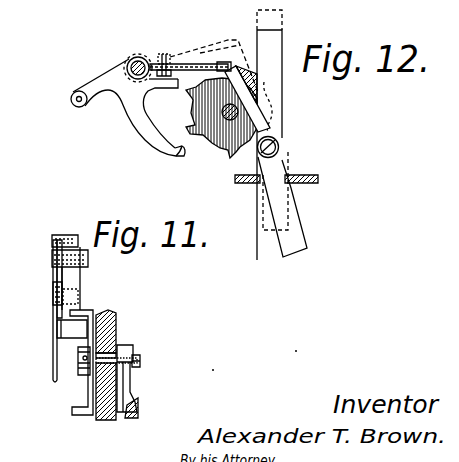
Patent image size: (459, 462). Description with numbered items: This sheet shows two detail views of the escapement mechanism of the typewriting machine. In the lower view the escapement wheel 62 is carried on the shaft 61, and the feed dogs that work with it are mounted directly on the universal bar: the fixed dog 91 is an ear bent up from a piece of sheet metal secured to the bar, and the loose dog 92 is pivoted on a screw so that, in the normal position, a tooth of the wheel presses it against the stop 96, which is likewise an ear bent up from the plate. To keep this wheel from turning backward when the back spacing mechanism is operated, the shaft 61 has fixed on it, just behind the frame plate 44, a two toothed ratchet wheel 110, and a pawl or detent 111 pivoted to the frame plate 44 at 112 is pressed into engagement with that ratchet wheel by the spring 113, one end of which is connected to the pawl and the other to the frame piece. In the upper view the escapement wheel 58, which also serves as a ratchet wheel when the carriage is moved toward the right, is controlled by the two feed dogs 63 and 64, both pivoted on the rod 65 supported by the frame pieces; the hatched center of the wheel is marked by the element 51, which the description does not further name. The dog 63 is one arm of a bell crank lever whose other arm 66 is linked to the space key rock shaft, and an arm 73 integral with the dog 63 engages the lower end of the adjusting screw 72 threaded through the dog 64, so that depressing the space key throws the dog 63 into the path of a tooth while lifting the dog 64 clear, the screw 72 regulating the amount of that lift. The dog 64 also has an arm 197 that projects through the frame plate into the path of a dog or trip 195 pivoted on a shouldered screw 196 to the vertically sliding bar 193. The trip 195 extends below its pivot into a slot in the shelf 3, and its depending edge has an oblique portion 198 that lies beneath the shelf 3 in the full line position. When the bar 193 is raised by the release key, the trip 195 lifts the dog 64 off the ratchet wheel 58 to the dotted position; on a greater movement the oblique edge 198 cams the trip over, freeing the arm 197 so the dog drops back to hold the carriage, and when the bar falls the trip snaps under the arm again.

In FIG. 12, the shelf 3 is at (300, 176).
In FIG. 11, the frame plate 44 is at (115, 313).
In FIG. 12, the pivot pin 51 is at (228, 112).
In FIG. 12, the escapement wheel 58 is at (209, 140).
In FIG. 11, the shaft 61 is at (140, 361).
In FIG. 11, the escapement wheel 62 is at (90, 390).
In FIG. 12, the feed dog 63 is at (174, 153).
In FIG. 12, the feed dog 64 is at (185, 62).
In FIG. 12, the rod 65 is at (133, 58).
In FIG. 12, the arm of bell crank lever 66 is at (97, 94).
In FIG. 12, the adjusting screw 72 is at (163, 52).
In FIG. 12, the arm 73 is at (159, 90).
In FIG. 11, the fixed dog 91 is at (72, 336).
In FIG. 11, the loose dog 92 is at (80, 280).
In FIG. 11, the stop 96 is at (78, 296).
In FIG. 11, the two toothed ratchet wheel 110 is at (128, 351).
In FIG. 11, the pawl or detent 111 is at (130, 377).
In FIG. 11, the pivot 112 is at (138, 408).
In FIG. 11, the spring 113 is at (132, 391).
In FIG. 12, the bar 193 is at (284, 36).
In FIG. 12, the dog or trip 195 is at (253, 86).
In FIG. 12, the shouldered screw 196 is at (279, 146).
In FIG. 12, the arm 197 is at (218, 61).
In FIG. 12, the oblique portion 198 is at (291, 192).